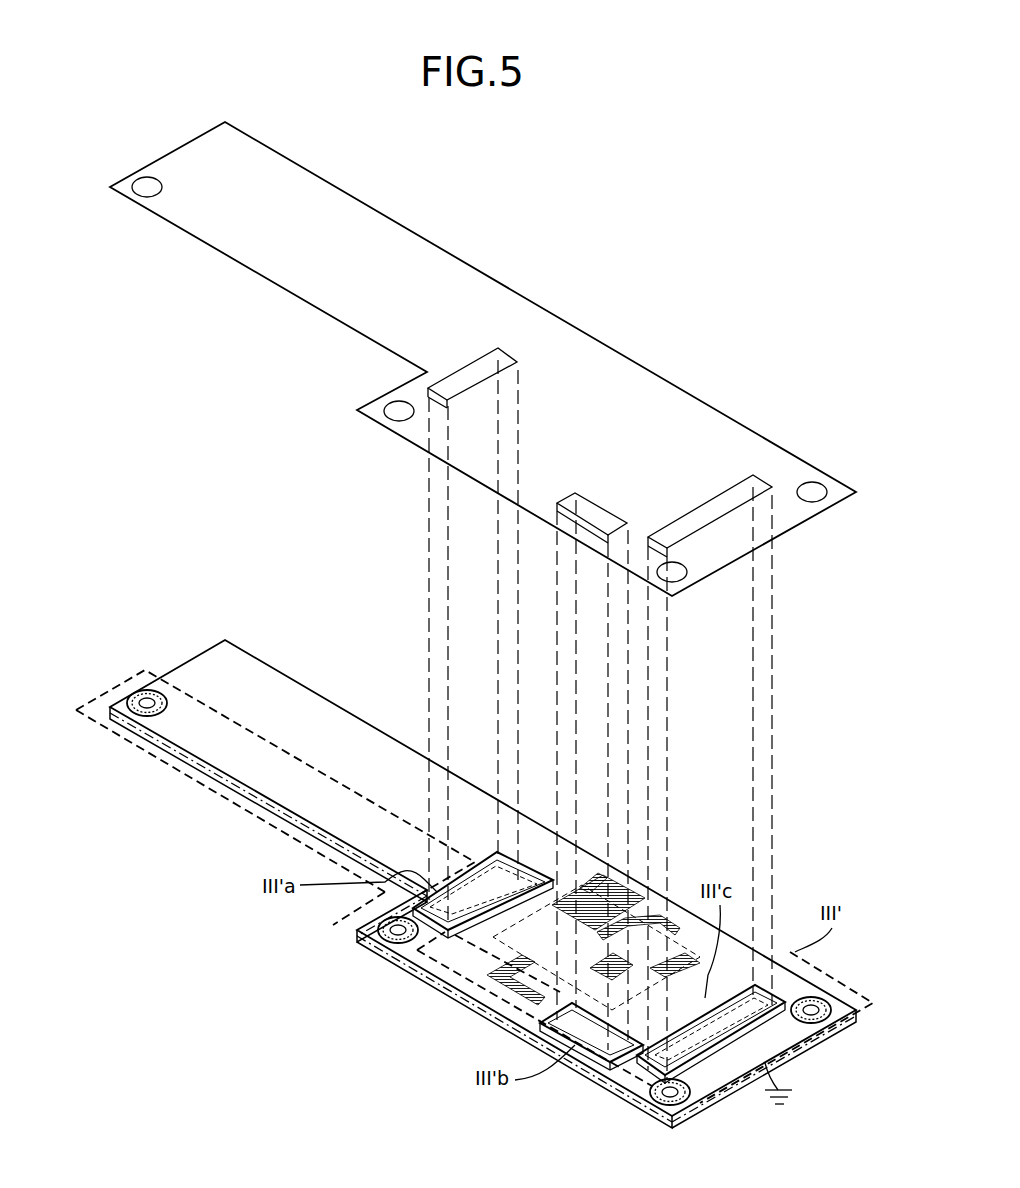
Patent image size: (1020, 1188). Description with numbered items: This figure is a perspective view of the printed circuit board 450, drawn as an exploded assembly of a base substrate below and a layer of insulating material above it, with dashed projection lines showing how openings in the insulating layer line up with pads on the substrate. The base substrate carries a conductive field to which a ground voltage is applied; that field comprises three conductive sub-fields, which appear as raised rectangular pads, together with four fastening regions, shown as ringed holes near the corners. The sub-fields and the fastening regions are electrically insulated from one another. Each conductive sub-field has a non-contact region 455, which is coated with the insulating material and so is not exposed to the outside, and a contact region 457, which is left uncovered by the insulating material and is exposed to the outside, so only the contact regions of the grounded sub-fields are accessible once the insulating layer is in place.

The printed circuit board 450 is at (592, 211).
The non-contact region 455 is at (540, 1024).
The contact region 457 is at (605, 1043).